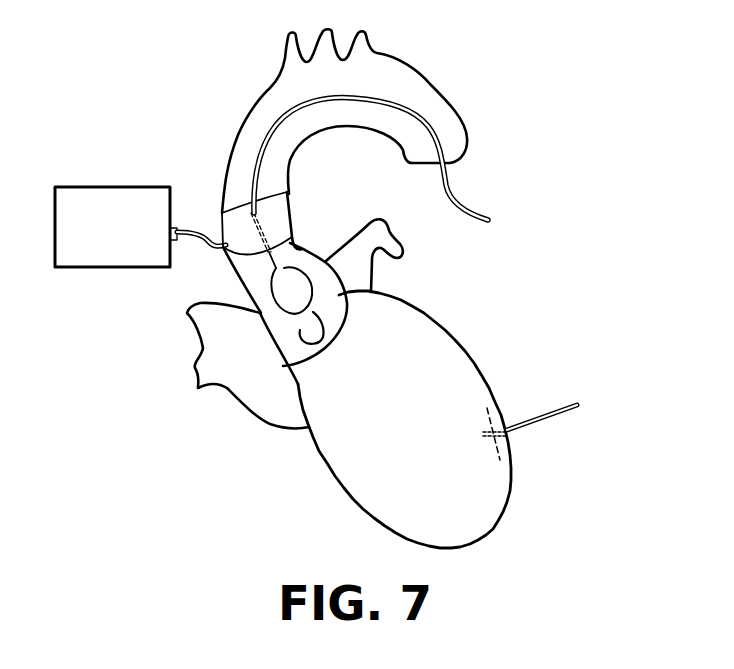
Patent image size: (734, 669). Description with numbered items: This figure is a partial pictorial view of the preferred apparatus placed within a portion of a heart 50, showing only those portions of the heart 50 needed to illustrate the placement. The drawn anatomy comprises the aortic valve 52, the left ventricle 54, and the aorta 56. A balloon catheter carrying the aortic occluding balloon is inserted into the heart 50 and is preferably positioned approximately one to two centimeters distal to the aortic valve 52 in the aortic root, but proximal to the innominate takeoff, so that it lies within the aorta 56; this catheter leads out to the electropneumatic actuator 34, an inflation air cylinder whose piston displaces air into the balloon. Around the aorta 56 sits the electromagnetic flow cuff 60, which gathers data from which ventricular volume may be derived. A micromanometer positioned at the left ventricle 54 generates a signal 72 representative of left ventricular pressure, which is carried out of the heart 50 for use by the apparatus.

The heart 50 is at (555, 544).
The aortic valve 52 is at (228, 365).
The left ventricle 54 is at (362, 478).
The aorta 56 is at (420, 72).
The electromagnetic flow cuff 60 is at (105, 186).
The electropneumatic actuator 34 is at (493, 220).
The signal 72 is at (578, 404).